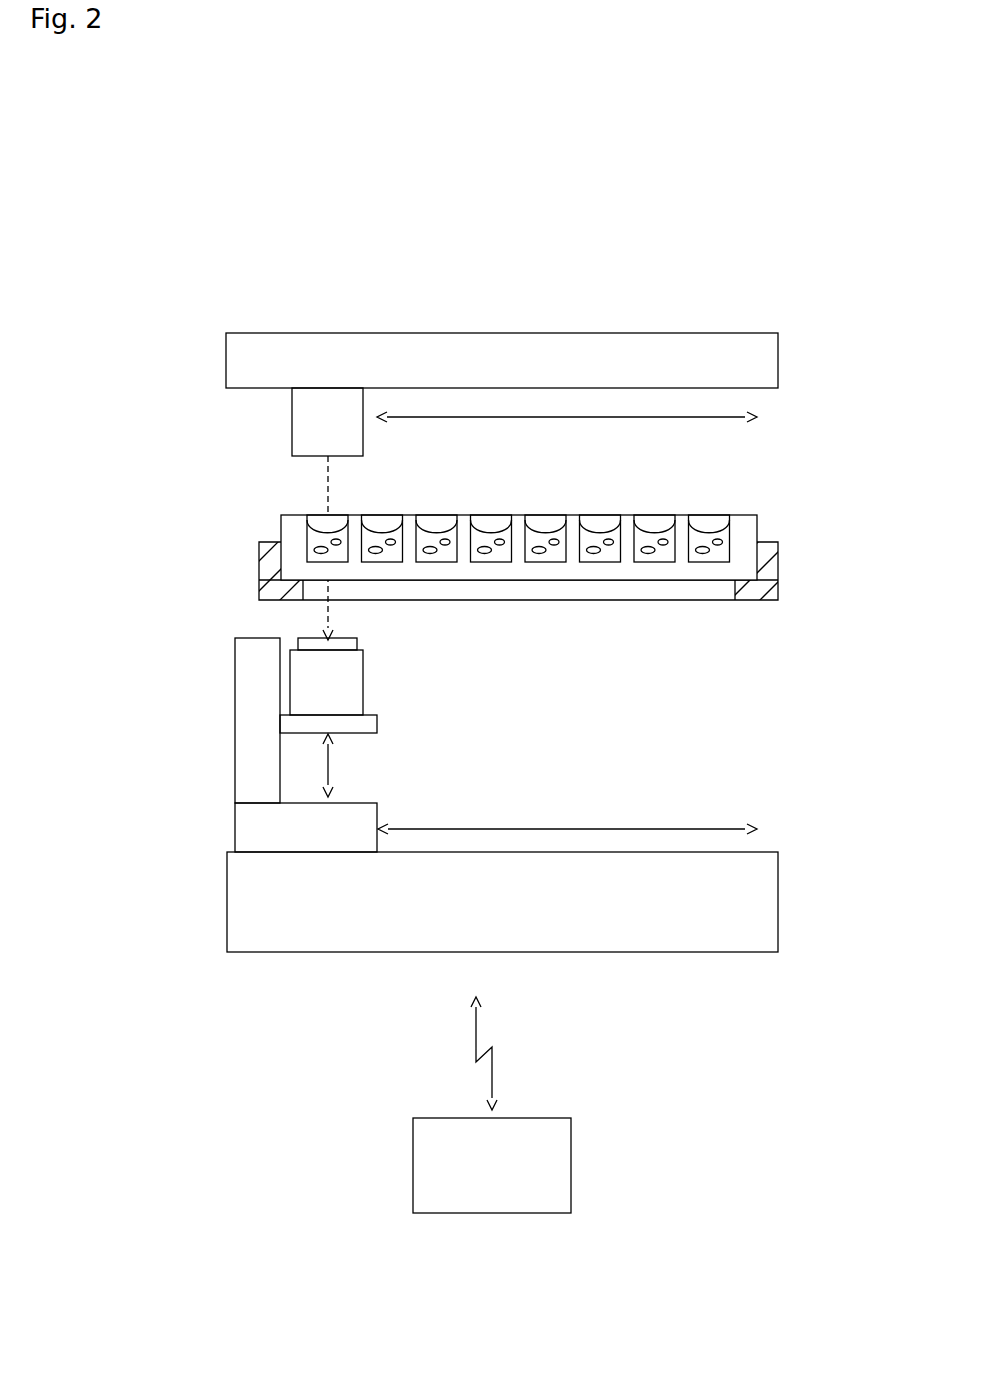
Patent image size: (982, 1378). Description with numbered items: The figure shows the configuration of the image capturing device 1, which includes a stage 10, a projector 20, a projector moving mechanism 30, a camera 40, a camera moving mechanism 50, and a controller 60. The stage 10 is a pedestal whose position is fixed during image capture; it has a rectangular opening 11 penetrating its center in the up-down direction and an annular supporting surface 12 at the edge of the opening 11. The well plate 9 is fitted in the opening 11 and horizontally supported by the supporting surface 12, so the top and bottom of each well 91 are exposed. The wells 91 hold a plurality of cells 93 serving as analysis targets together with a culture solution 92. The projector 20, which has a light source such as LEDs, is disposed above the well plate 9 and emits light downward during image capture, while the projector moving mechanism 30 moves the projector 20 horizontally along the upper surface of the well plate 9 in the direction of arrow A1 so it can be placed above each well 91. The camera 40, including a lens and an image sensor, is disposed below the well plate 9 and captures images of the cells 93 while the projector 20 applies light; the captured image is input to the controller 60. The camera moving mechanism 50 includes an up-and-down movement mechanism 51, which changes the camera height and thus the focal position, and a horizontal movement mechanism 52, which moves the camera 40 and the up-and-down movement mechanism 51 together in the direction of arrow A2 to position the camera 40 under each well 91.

The image capturing device 1 is at (410, 285).
The well plate 9 is at (572, 567).
The stage 10 is at (780, 570).
The opening 11 is at (658, 590).
The supporting surface 12 is at (293, 576).
The projector 20 is at (315, 418).
The projector moving mechanism 30 is at (625, 348).
The camera 40 is at (342, 678).
The camera moving mechanism 50 is at (139, 795).
The up-and-down movement mechanism 51 is at (257, 758).
The horizontal movement mechanism 52 is at (228, 880).
The controller 60 is at (413, 1165).
The well 91 is at (438, 518).
The culture solution 92 is at (500, 556).
The cell 93 is at (446, 547).
The arrow A1 is at (595, 418).
The arrow A2 is at (561, 828).